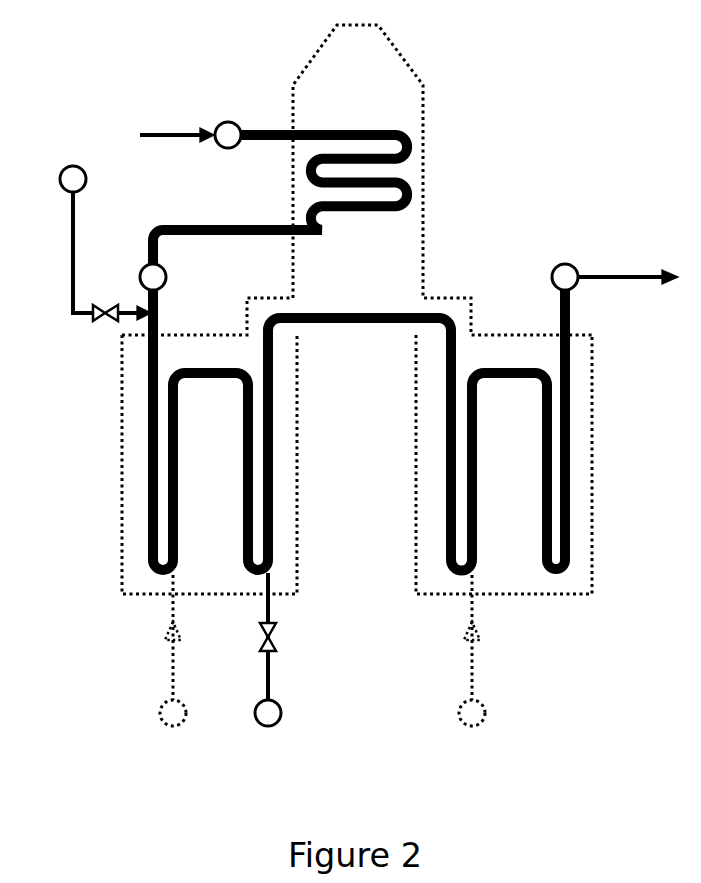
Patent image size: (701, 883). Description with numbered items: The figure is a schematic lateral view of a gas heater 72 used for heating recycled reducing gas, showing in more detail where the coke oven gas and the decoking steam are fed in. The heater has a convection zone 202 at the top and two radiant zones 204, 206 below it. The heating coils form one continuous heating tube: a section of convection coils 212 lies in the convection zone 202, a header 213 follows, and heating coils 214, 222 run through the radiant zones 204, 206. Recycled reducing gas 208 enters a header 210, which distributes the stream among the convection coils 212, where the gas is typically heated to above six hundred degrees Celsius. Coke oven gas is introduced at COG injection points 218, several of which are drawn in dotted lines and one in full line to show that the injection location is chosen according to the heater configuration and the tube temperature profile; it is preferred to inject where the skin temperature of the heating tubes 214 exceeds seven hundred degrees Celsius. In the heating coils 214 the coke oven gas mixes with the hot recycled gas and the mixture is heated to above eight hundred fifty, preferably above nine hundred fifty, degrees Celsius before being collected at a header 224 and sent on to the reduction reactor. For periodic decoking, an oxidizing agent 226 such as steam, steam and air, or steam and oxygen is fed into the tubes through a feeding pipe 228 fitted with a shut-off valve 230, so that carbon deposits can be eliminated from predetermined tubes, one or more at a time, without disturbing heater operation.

The gas heater 72 is at (460, 105).
The convection zone 202 is at (362, 74).
The radiant zone 204 is at (219, 564).
The radiant zone 206 is at (526, 565).
The recycled reducing gas 208 is at (182, 132).
The header 210 is at (228, 122).
The convection coils 212 is at (413, 181).
The header 213 is at (141, 276).
The heating coils 214 is at (150, 424).
The COG injection points 218 is at (160, 707).
The heating coils 222 is at (572, 472).
The header 224 is at (565, 263).
The oxidizing agent 226 is at (61, 178).
The feeding pipe 228 is at (70, 270).
The shut-off valve 230 is at (98, 323).